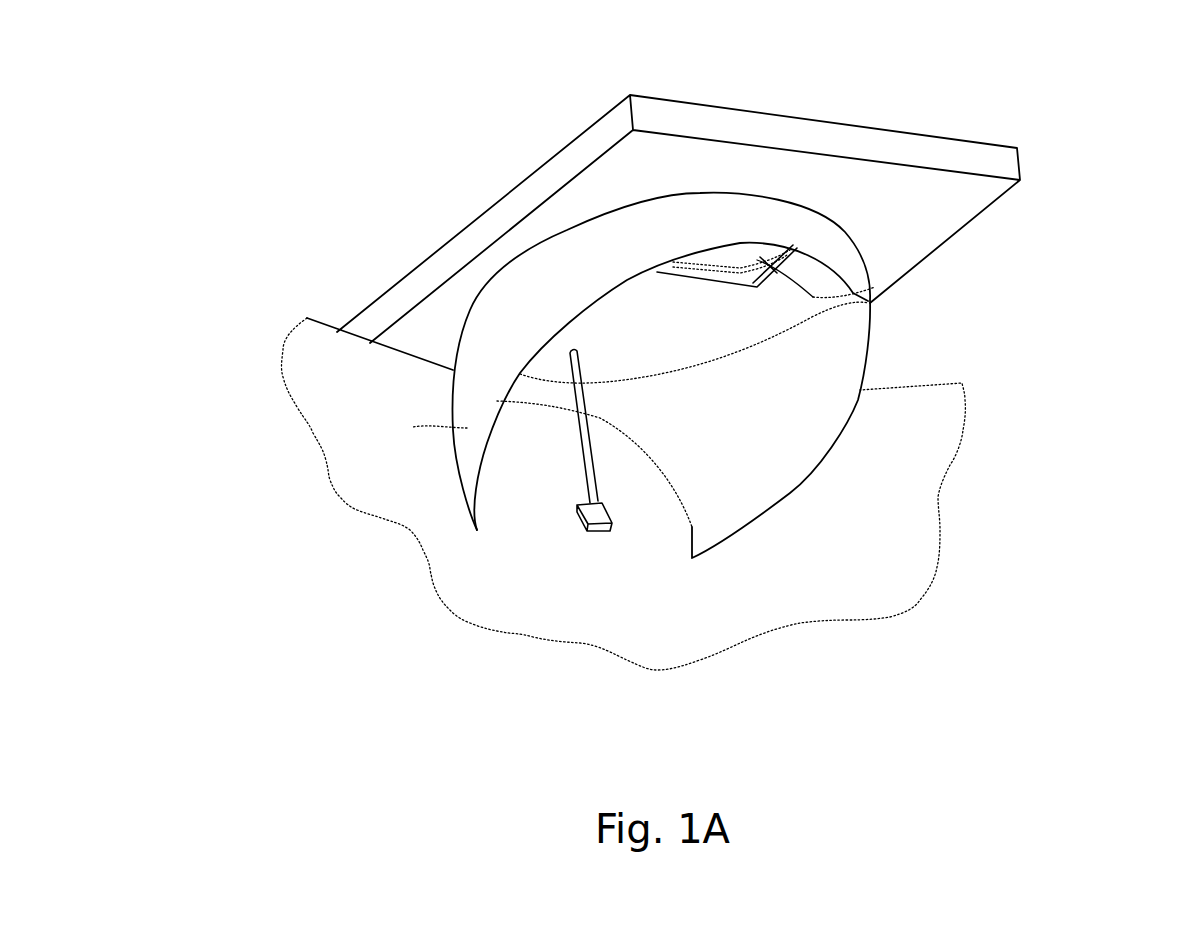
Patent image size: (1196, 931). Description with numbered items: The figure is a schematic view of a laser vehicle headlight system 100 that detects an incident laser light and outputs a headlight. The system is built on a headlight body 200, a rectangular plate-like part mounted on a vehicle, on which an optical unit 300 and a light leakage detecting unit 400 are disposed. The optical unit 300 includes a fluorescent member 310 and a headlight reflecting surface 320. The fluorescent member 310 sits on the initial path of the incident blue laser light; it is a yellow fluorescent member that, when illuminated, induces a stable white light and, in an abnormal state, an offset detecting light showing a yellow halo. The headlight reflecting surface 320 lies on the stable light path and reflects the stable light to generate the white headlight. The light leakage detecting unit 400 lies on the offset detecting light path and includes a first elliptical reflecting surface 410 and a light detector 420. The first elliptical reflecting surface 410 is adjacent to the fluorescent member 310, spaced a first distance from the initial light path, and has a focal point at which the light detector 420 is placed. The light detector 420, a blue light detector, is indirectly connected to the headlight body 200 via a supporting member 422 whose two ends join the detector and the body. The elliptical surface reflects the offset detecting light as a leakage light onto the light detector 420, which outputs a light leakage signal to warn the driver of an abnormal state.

The laser vehicle headlight system 100 is at (230, 76).
The headlight body 200 is at (567, 163).
The optical unit 300 is at (739, 431).
The fluorescent member 310 is at (875, 287).
The headlight reflecting surface 320 is at (917, 423).
The light leakage detecting unit 400 is at (393, 437).
The first elliptical reflecting surface 410 is at (467, 428).
The light detector 420 is at (593, 533).
The supporting member 422 is at (577, 395).